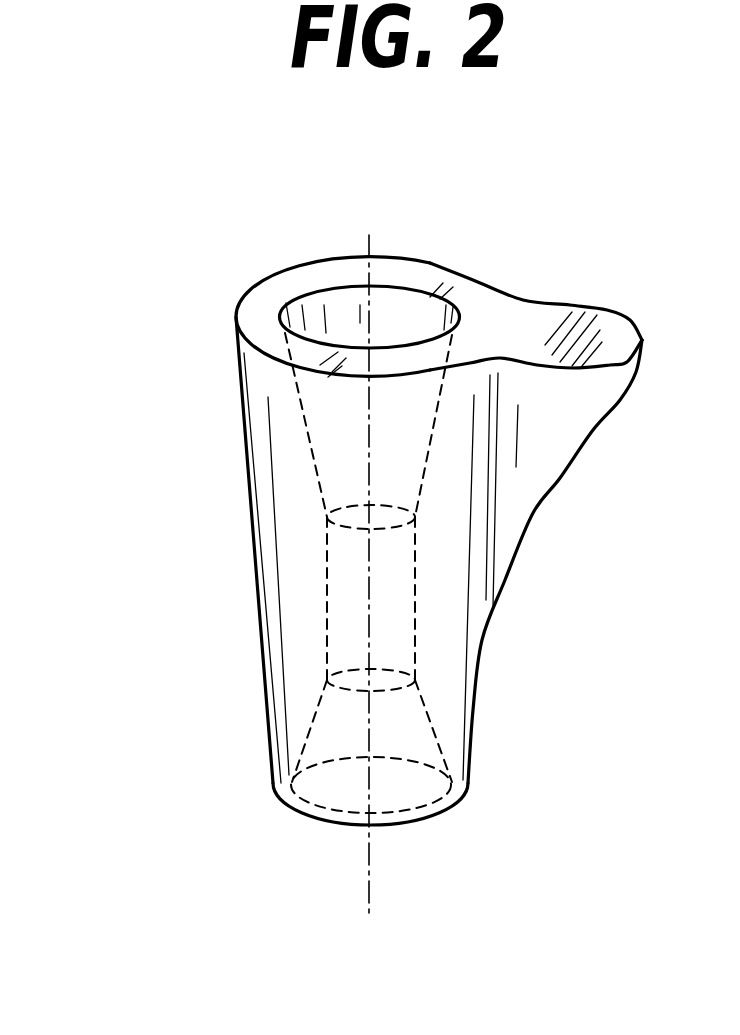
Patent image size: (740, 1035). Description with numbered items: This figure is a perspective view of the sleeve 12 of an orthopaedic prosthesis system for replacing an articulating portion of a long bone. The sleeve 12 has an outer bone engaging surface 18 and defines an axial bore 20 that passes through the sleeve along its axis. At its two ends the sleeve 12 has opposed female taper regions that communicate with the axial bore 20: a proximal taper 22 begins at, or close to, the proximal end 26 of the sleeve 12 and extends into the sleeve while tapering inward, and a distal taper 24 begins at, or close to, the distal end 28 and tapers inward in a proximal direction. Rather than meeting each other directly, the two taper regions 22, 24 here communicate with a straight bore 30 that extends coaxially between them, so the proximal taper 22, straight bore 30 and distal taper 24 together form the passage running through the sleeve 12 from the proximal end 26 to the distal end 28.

The sleeve 12 is at (152, 278).
The outer bone engaging surface 18 is at (533, 513).
The axial bore 20 is at (333, 505).
The proximal female taper region 22 is at (318, 312).
The distal female taper region 24 is at (317, 757).
The proximal end 26 is at (412, 273).
The distal end 28 is at (428, 818).
The straight bore 30 is at (338, 617).